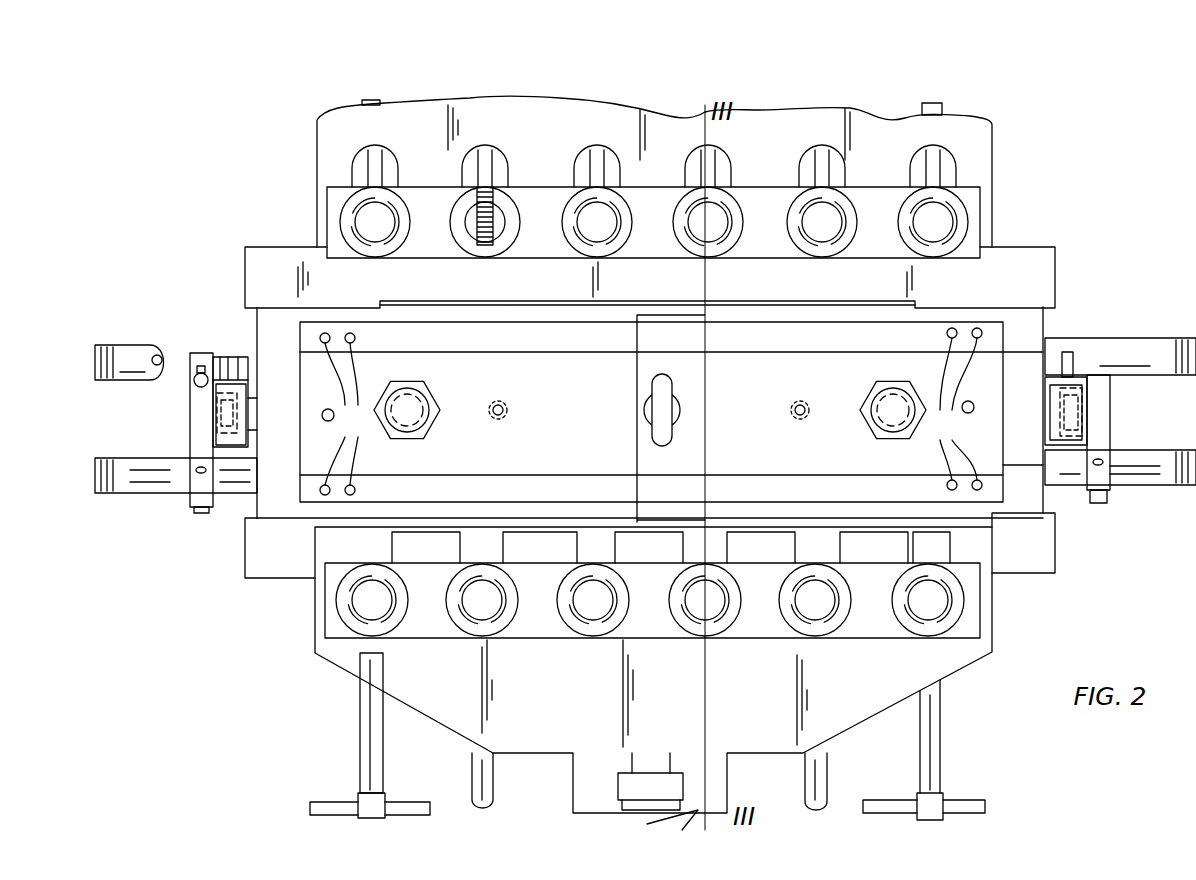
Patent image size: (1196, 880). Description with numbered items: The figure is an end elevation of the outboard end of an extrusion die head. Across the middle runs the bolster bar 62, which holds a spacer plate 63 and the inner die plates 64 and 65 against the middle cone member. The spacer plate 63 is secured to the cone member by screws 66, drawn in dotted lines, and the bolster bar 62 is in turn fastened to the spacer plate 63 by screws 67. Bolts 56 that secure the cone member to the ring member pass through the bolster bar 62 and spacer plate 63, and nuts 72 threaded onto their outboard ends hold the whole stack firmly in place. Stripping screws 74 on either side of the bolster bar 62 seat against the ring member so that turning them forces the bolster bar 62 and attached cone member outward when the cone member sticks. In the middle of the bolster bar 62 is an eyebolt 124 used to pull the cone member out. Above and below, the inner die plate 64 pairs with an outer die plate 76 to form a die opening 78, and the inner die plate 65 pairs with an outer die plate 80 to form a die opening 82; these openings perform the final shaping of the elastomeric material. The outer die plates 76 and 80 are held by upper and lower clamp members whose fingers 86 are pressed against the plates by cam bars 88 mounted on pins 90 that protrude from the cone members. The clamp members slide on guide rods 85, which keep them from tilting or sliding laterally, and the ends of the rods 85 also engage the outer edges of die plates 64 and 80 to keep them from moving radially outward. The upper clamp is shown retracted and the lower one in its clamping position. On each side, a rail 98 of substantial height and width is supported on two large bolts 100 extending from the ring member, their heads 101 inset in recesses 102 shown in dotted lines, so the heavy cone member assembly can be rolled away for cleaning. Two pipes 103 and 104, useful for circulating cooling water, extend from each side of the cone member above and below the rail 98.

The bolts 56 is at (407, 396).
The bolster bar 62 is at (998, 353).
The spacer plate 63 is at (1033, 362).
The die plate 64 is at (1023, 308).
The die plate 65 is at (1035, 513).
The screws 66 is at (508, 408).
The screws 67 is at (651, 411).
The nuts 72 is at (425, 430).
The stripping screws 74 is at (321, 415).
The die plate 76 is at (1013, 253).
The die opening 78 is at (917, 301).
The die plate 80 is at (1048, 570).
The die opening 82 is at (913, 527).
The guide rods 85 is at (318, 115).
The fingers 86 is at (543, 165).
The cam bars 88 is at (760, 190).
The pins 90 is at (375, 232).
The rails 98 is at (225, 440).
The bolts 100 is at (252, 358).
The heads 101 is at (210, 417).
The recesses 102 is at (212, 405).
The pipe 103 is at (140, 352).
The pipe 104 is at (175, 488).
The eyebolt 124 is at (681, 418).